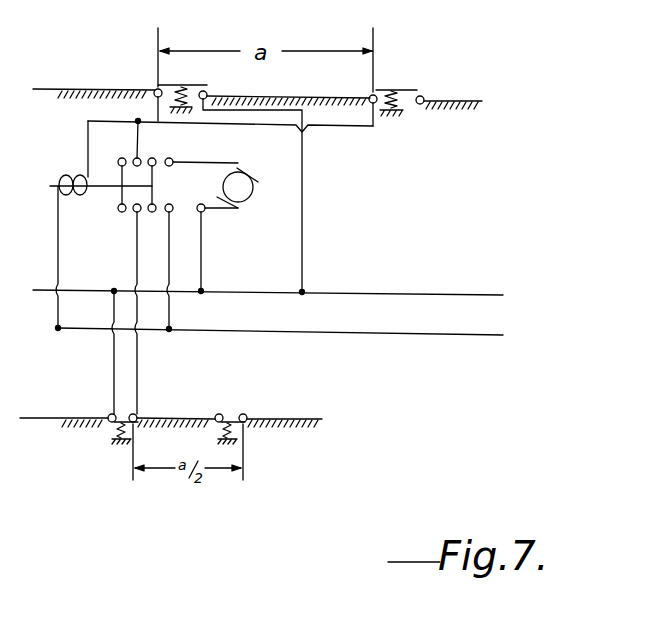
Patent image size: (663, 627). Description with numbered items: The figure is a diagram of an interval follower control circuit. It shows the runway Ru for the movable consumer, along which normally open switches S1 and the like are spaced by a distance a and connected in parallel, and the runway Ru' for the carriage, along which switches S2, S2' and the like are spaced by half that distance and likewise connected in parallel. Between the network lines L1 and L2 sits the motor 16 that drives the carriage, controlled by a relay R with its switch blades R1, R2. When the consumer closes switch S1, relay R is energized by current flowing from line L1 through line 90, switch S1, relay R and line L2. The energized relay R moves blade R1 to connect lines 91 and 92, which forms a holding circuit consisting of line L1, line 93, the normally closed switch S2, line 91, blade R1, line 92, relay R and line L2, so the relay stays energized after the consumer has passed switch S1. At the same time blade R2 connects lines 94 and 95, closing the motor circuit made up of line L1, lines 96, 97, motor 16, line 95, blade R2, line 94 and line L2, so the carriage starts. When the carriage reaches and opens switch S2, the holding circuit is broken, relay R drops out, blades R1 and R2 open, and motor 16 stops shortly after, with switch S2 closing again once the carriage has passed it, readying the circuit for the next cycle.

The motor 16 is at (244, 200).
The line 90 is at (303, 213).
The line 91 is at (135, 251).
The line 92 is at (143, 140).
The line 93 is at (112, 381).
The line 94 is at (169, 245).
The line 95 is at (200, 163).
The line 96 is at (202, 258).
The line 97 is at (206, 214).
The normally open switch S1 is at (170, 86).
The normally closed switch S2 is at (79, 439).
The switch S2' is at (402, 91).
The relay R is at (66, 178).
The switch blade R1 is at (120, 180).
The switch blade R2 is at (155, 182).
The network line L1 is at (512, 288).
The network line L2 is at (512, 328).
The runway Ru is at (462, 93).
The runway Ru' is at (298, 432).